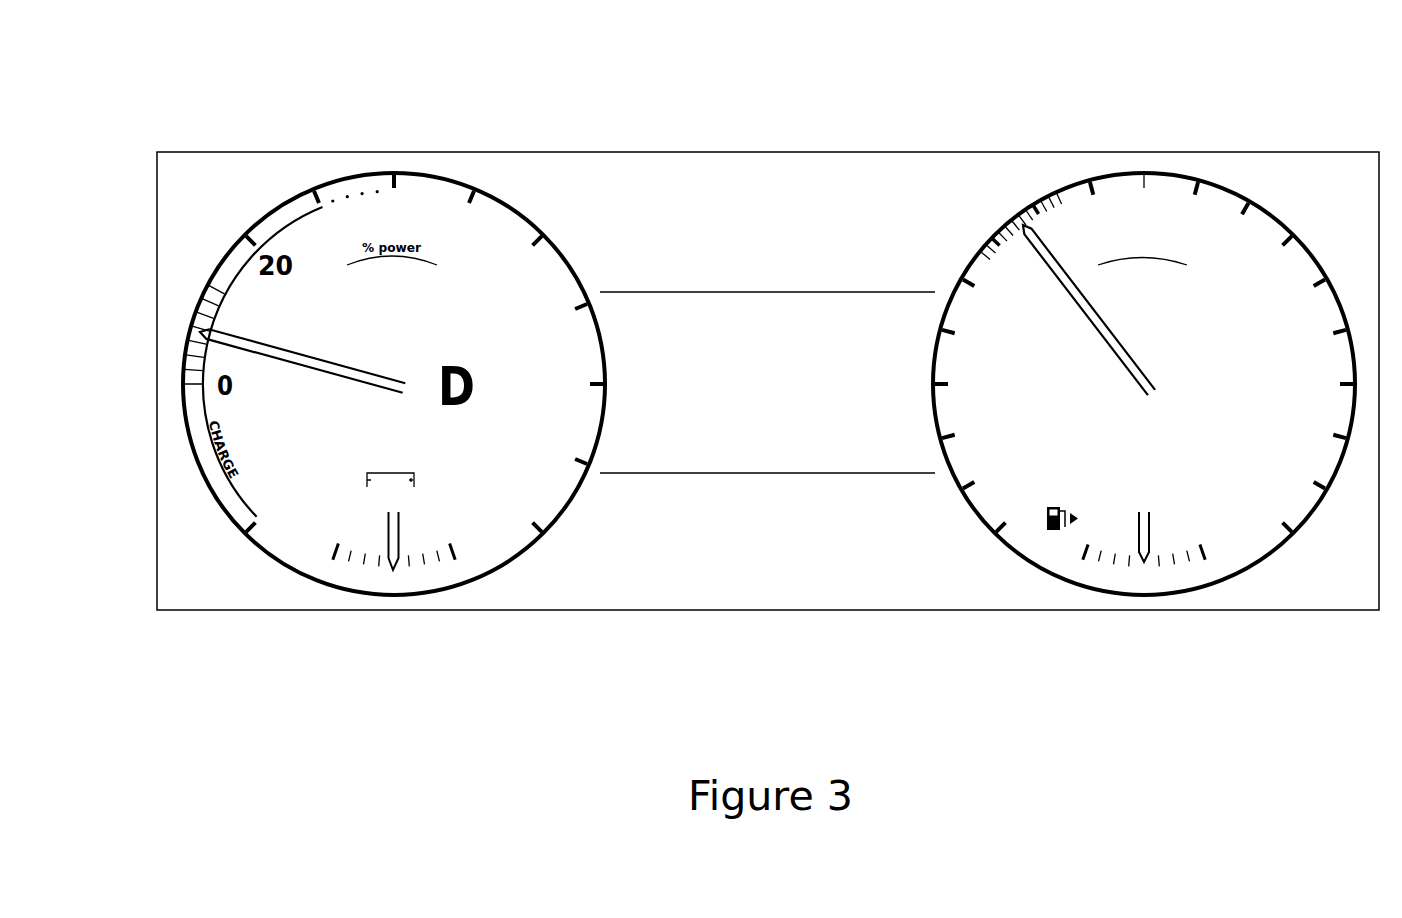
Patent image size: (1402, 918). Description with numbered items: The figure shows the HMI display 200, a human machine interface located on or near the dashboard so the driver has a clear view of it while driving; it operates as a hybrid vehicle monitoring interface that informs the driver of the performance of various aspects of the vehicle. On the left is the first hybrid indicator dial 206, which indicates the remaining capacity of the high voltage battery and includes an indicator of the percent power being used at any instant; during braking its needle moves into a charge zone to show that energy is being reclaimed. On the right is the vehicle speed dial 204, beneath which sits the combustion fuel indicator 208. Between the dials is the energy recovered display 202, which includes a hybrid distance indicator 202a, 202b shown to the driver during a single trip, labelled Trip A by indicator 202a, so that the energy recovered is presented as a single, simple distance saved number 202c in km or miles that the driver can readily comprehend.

The HMI display 200 is at (942, 120).
The energy recovered display 202 is at (757, 467).
The hybrid distance indicator (single trip) 202a is at (602, 570).
The hybrid distance indicator 202b is at (695, 570).
The distance saved number 202c is at (907, 570).
The vehicle speed dial 204 is at (1157, 220).
The first hybrid indicator dial 206 is at (385, 566).
The combustion fuel indicator 208 is at (1145, 563).